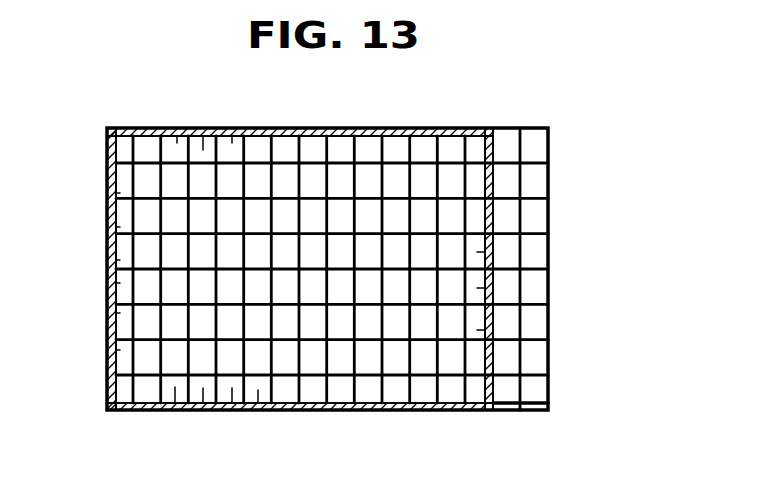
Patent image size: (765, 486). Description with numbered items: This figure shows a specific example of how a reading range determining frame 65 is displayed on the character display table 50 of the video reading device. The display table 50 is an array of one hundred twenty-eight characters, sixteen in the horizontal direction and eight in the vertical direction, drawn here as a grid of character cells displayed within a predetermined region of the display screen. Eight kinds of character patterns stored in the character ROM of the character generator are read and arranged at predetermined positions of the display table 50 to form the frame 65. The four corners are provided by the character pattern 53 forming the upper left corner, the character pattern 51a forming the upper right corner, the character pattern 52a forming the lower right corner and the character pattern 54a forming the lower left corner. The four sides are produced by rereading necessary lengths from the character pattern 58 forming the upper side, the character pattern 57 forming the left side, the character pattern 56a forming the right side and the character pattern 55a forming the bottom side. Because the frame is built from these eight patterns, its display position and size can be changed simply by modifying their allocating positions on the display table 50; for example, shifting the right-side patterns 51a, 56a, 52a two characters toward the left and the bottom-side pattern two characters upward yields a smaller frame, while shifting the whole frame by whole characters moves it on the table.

The display table 50 is at (553, 198).
The character pattern forming the upper right corner 51a is at (477, 148).
The character pattern forming the lower right corner 52a is at (477, 386).
The character pattern forming the upper left corner 53 is at (108, 143).
The character pattern forming the lower left corner 54a is at (108, 392).
The character pattern forming the bottom side 55a is at (258, 390).
The character pattern forming the right side 56a is at (477, 330).
The character pattern forming the left side 57 is at (118, 350).
The character pattern forming the upper side 58 is at (232, 143).
The reading range determining frame 65 is at (348, 131).